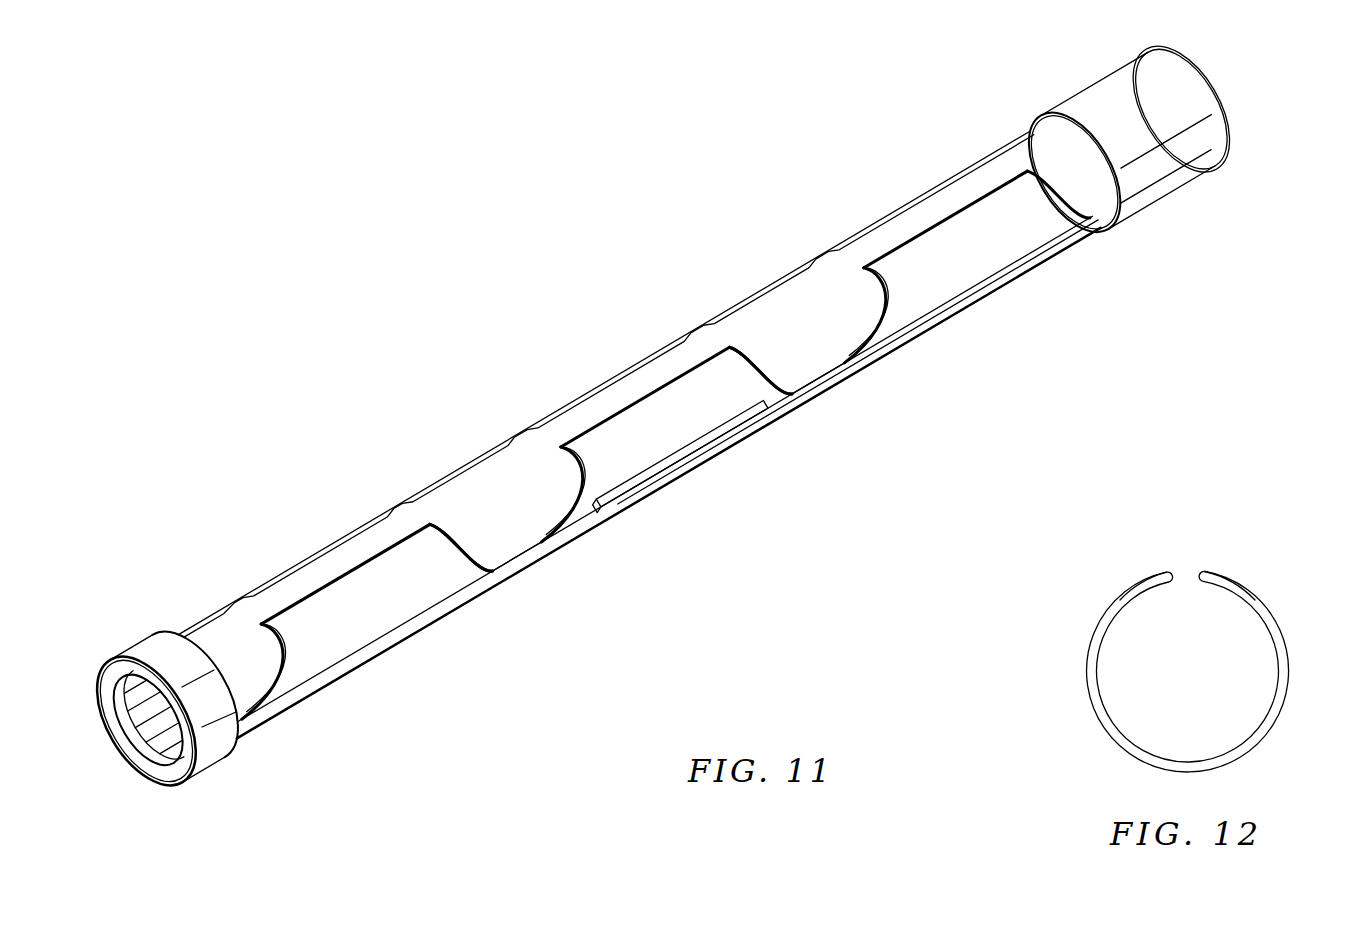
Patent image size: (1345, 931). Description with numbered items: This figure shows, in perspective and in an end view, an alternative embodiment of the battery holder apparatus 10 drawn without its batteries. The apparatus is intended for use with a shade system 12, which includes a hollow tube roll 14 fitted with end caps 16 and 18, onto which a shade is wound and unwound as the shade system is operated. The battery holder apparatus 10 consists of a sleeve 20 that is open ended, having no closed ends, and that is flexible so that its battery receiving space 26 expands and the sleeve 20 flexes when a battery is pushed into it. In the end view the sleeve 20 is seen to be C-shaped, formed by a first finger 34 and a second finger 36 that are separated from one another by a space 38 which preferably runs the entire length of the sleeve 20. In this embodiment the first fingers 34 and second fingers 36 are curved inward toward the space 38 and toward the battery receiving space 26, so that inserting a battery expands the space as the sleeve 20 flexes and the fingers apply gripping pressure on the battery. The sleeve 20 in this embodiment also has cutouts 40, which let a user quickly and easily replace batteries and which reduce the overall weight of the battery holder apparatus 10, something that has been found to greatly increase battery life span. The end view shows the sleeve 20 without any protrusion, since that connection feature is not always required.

In FIG. 11, the battery holder apparatus 10 is at (390, 184).
In FIG. 11, the shade system 12 is at (1040, 232).
In FIG. 11, the tube roll 14 is at (1180, 85).
In FIG. 11, the end cap 16 is at (1228, 122).
In FIG. 11, the end cap 18 is at (215, 737).
In FIG. 11, the sleeve 20 is at (1017, 190).
In FIG. 12, the sleeve 20 is at (1262, 738).
In FIG. 11, the battery receiving space 26 is at (802, 320).
In FIG. 11, the first finger 34 is at (590, 378).
In FIG. 12, the first finger 34 is at (1165, 572).
In FIG. 11, the second finger 36 is at (690, 455).
In FIG. 12, the second finger 36 is at (1227, 574).
In FIG. 12, the space 38 is at (1190, 566).
In FIG. 11, the cutouts 40 is at (855, 329).